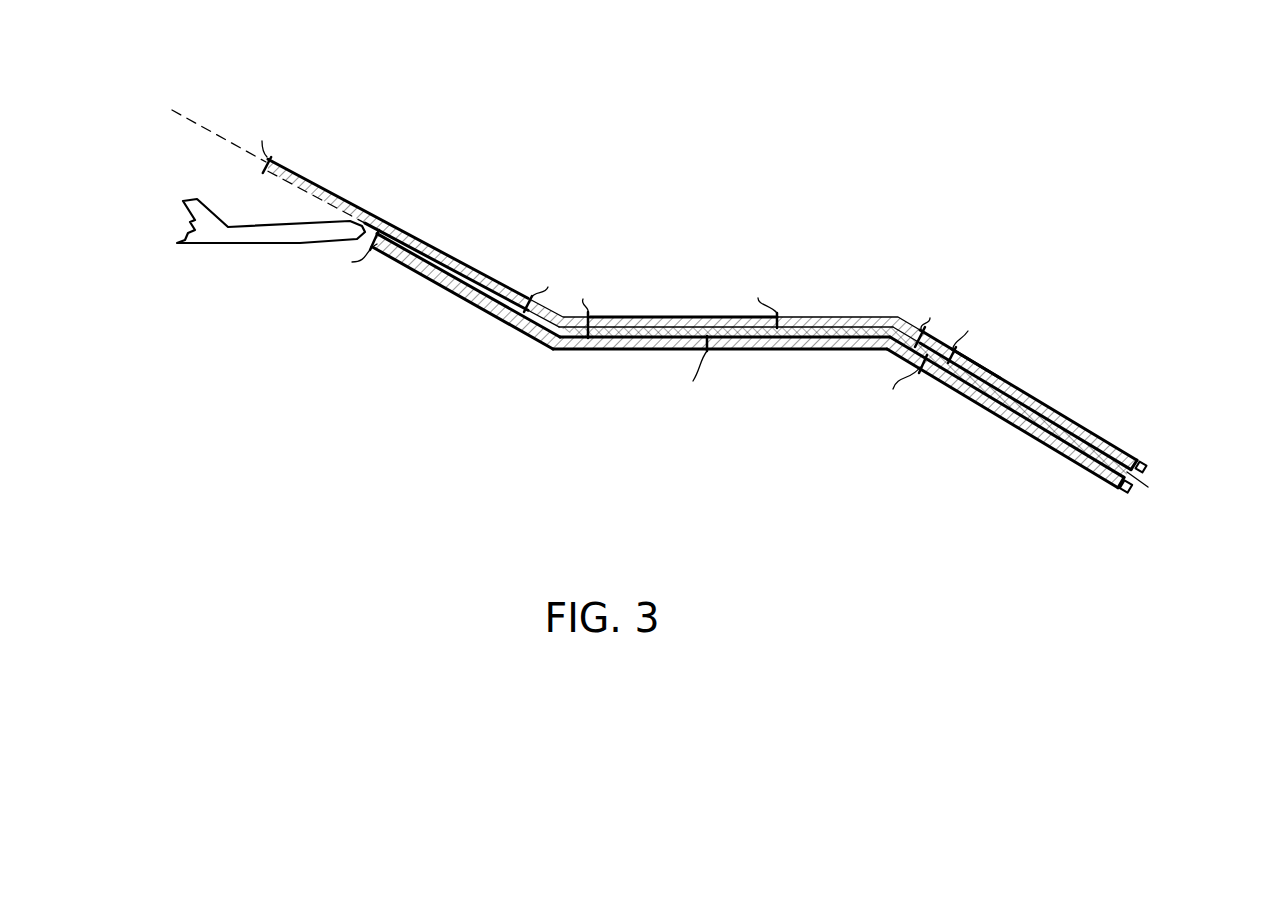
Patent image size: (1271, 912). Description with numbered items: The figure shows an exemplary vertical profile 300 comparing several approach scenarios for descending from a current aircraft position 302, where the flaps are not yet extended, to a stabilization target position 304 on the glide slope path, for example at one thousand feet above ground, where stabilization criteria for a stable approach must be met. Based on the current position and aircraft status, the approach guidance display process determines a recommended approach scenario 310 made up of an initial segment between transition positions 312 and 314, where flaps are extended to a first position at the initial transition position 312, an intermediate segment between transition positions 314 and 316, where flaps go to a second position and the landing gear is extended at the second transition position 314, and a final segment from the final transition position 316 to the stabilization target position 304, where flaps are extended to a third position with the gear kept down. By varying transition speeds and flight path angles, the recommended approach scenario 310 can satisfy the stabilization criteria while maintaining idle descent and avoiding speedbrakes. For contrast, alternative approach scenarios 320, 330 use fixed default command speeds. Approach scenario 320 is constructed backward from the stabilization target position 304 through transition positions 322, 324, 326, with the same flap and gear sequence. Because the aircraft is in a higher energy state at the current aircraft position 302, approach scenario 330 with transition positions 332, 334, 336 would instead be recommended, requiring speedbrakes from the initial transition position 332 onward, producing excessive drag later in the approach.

The vertical profile 300 is at (685, 256).
The current aircraft position 302 is at (250, 247).
The stabilization target position 304 is at (1142, 464).
The recommended approach scenario 310 is at (727, 359).
The initial transition position 312 is at (380, 246).
The second transition position 314 is at (712, 351).
The final transition position 316 is at (923, 373).
The alternative approach scenario 320 is at (654, 285).
The initial transition position 322 is at (271, 157).
The second transition position 324 is at (591, 315).
The final transition position 326 is at (913, 326).
The alternative approach scenario 330 is at (811, 340).
The initial transition position 332 is at (529, 296).
The second transition position 334 is at (780, 313).
The final transition position 336 is at (963, 354).